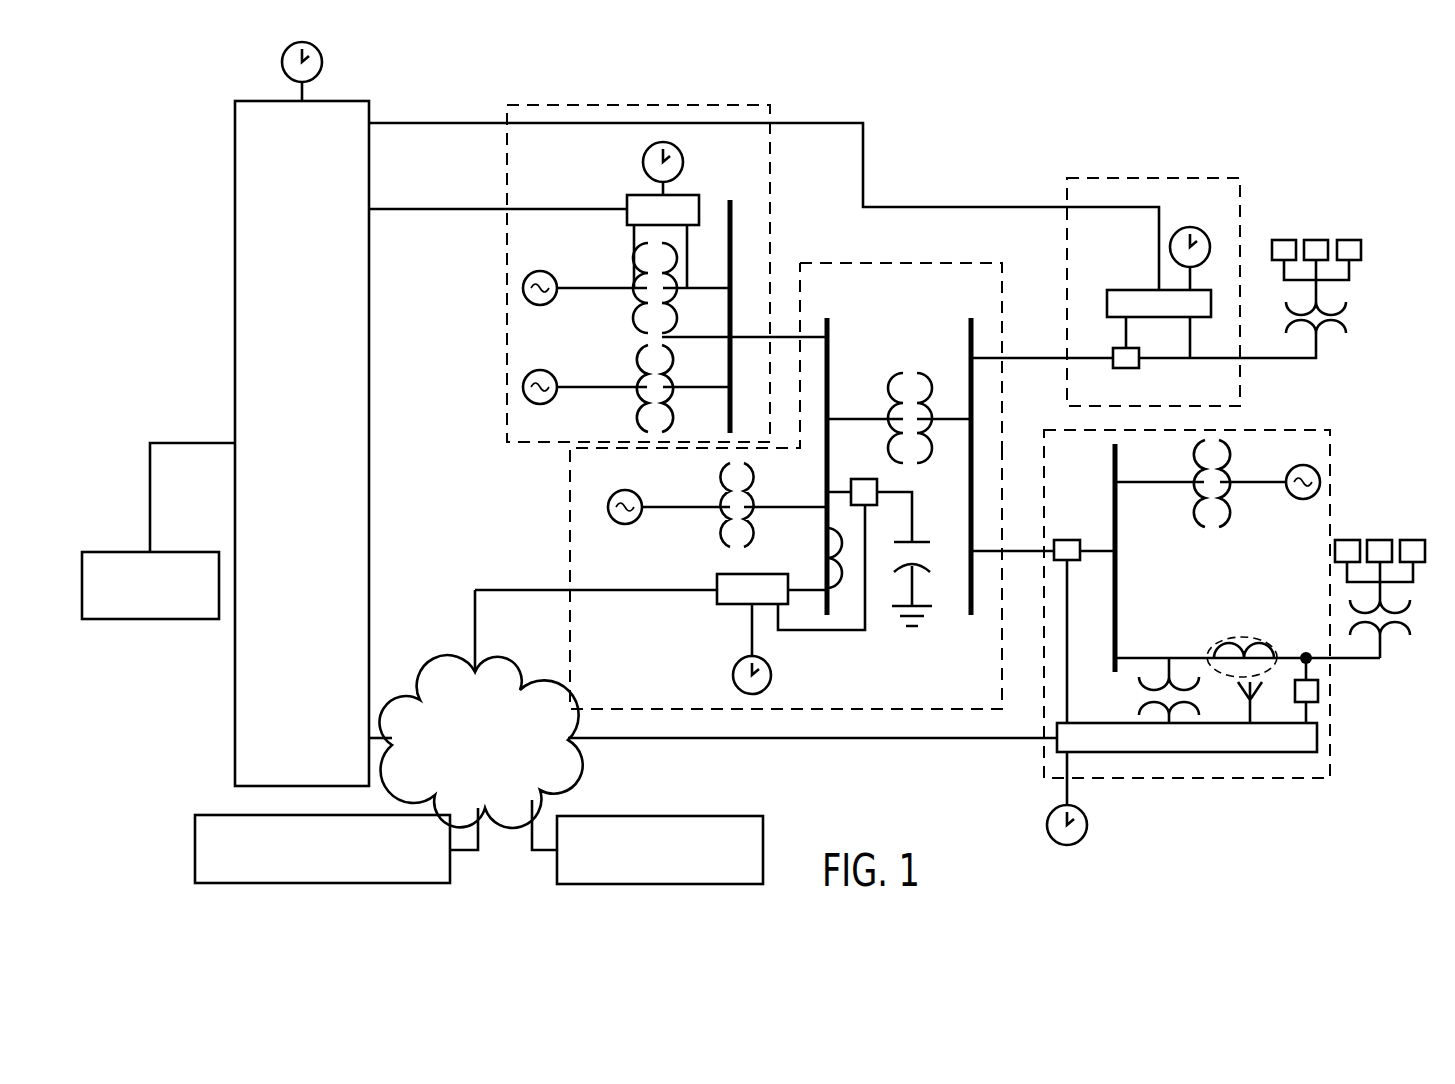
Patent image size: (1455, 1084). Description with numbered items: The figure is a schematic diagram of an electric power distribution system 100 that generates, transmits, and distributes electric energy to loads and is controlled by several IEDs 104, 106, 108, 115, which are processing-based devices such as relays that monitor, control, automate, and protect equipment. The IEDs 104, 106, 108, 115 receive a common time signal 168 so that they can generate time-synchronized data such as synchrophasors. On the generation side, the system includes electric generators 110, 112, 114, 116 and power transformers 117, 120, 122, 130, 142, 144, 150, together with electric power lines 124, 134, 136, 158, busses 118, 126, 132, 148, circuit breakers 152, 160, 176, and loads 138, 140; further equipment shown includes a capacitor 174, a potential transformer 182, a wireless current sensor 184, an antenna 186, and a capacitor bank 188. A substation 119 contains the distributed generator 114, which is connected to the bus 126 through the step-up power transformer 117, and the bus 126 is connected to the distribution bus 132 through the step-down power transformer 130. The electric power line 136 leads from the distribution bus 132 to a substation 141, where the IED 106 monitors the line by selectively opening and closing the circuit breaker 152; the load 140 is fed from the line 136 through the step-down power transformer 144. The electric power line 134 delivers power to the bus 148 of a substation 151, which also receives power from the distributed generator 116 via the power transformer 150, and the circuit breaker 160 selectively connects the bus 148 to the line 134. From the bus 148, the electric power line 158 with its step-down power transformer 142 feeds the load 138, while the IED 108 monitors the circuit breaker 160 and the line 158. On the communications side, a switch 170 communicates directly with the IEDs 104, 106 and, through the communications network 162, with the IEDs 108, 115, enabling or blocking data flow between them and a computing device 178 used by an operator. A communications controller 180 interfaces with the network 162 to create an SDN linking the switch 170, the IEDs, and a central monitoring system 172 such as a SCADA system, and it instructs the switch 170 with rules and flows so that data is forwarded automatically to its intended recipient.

The electric power distribution system 100 is at (1322, 92).
The IED 104 is at (640, 195).
The IED 106 is at (1120, 290).
The IED 108 is at (1240, 752).
The electric generator 110 is at (545, 271).
The electric generator 112 is at (545, 370).
The electric generator 114 is at (628, 490).
The IED 115 is at (755, 574).
The electric generator 116 is at (1298, 499).
The power transformer 117 is at (727, 540).
The bus 118 is at (733, 203).
The substation 119 is at (570, 540).
The power transformer 120 is at (645, 320).
The power transformer 122 is at (645, 418).
The electric power line 124 is at (783, 337).
The bus 126 is at (830, 350).
The power transformer 130 is at (905, 372).
The distribution bus 132 is at (968, 598).
The electric power line 134 is at (1010, 553).
The electric power line 136 is at (1095, 360).
The load 138 is at (1380, 540).
The load 140 is at (1350, 240).
The substation 141 is at (1090, 178).
The power transformer 142 is at (1397, 623).
The power transformer 144 is at (1347, 320).
The bus 148 is at (1112, 444).
The power transformer 150 is at (1218, 430).
The substation 151 is at (1310, 780).
The circuit breaker 152 is at (1126, 370).
The electric power line 158 is at (1358, 668).
The circuit breaker 160 is at (1078, 541).
The communications network 162 is at (425, 680).
The common time signal 168 is at (323, 62).
The switch 170 is at (370, 442).
The central monitoring system 172 is at (195, 845).
The capacitor 174 is at (928, 542).
The circuit breaker 176 is at (860, 479).
The computing device 178 is at (150, 619).
The communications controller 180 is at (643, 816).
The potential transformer 182 is at (1138, 695).
The wireless current sensor 184 is at (1245, 640).
The antenna 186 is at (1263, 688).
The capacitor bank 188 is at (1320, 690).